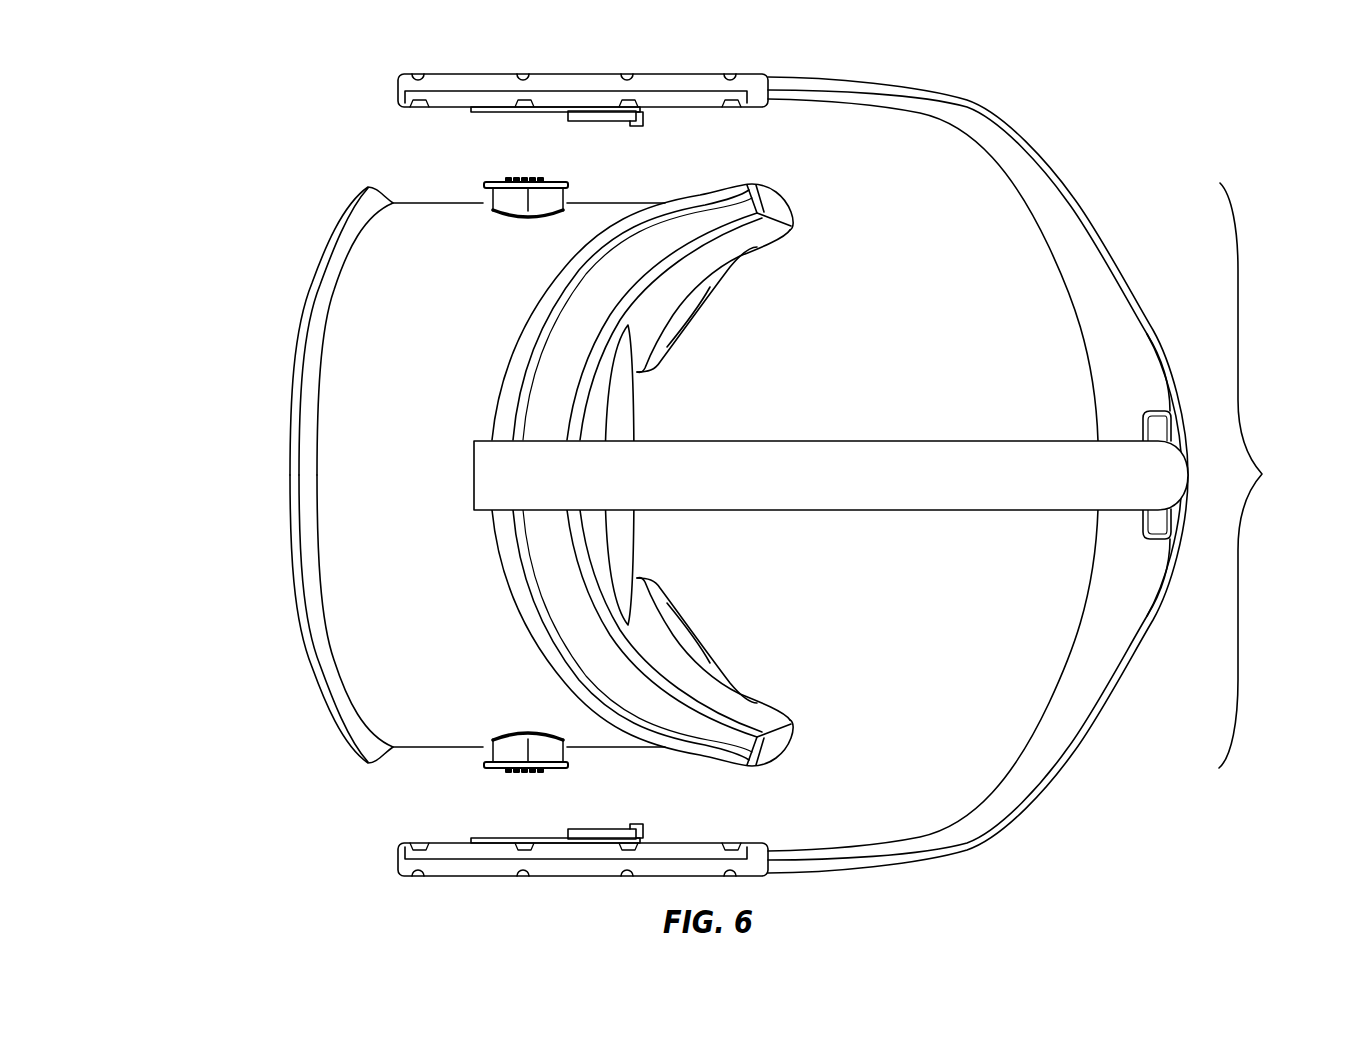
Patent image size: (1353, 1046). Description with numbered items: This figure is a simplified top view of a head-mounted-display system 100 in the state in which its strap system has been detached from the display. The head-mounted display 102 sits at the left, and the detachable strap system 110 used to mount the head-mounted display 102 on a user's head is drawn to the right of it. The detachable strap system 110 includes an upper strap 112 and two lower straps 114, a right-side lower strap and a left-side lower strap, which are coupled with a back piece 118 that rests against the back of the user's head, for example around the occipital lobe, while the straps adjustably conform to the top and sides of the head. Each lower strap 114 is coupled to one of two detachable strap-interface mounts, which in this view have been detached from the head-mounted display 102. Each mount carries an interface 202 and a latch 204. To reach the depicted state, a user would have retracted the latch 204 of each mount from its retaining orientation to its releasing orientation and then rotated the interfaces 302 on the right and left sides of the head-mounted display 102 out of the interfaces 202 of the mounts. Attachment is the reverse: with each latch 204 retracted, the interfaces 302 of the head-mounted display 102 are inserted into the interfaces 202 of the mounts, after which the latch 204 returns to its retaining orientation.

The head-mounted-display system 100 is at (373, 127).
The head-mounted display 102 is at (345, 524).
The detachable strap system 110 is at (1263, 477).
The upper strap 112 is at (906, 511).
The lower straps 114 is at (970, 108).
The back piece 118 is at (1183, 456).
The interface 202 is at (513, 115).
The latch 204 is at (607, 120).
The interface 302 is at (489, 212).